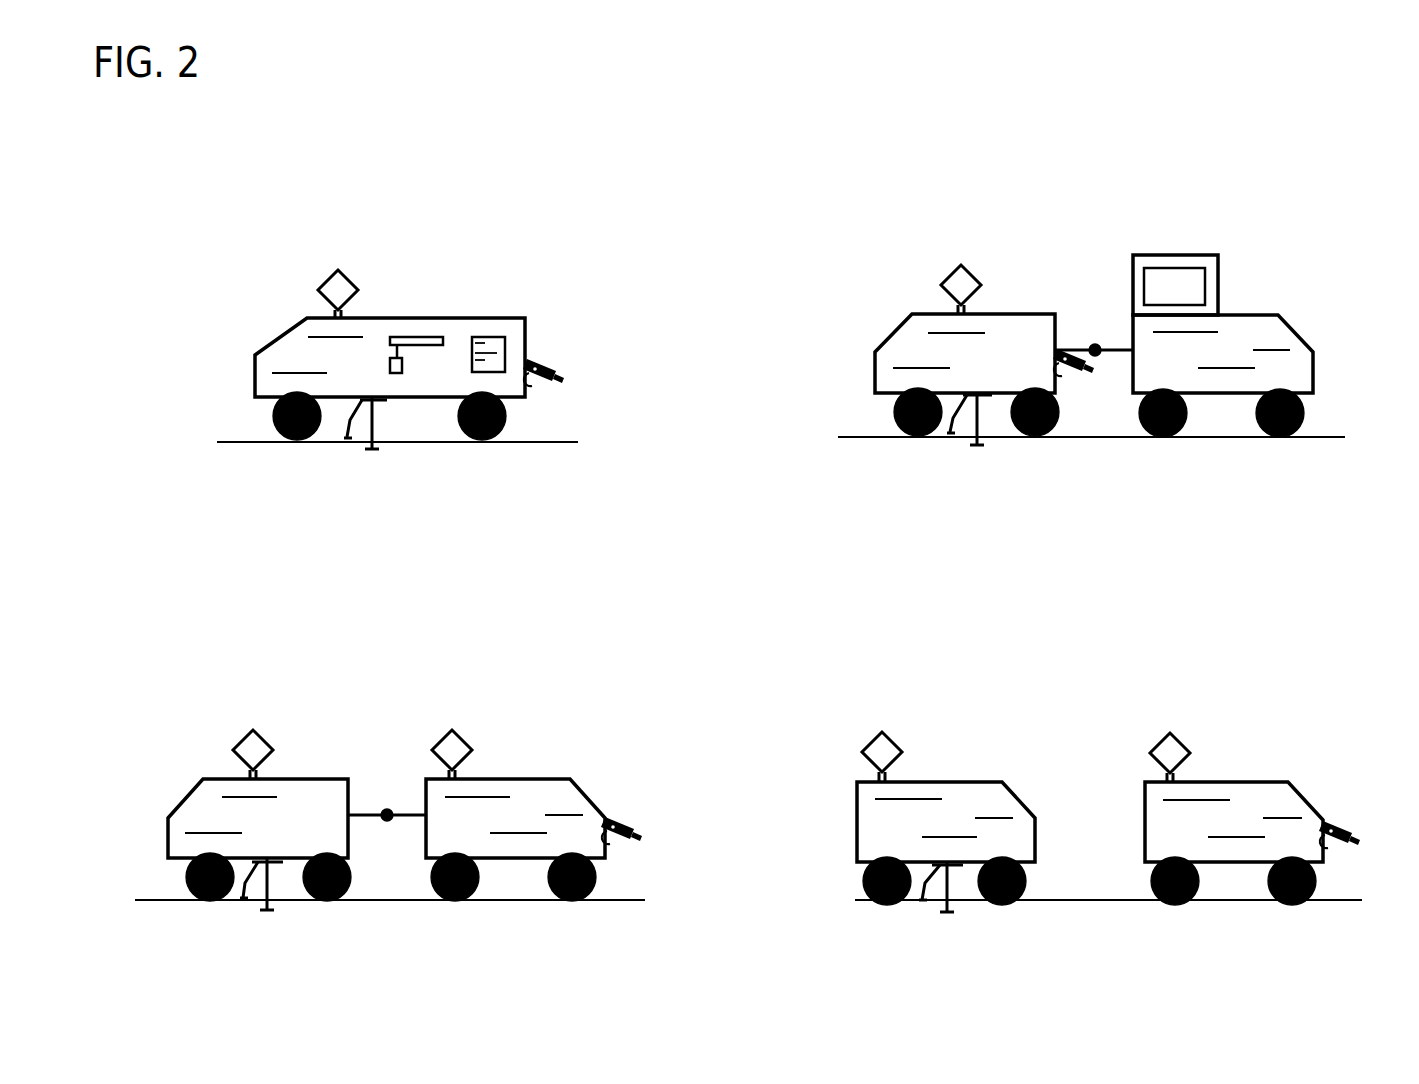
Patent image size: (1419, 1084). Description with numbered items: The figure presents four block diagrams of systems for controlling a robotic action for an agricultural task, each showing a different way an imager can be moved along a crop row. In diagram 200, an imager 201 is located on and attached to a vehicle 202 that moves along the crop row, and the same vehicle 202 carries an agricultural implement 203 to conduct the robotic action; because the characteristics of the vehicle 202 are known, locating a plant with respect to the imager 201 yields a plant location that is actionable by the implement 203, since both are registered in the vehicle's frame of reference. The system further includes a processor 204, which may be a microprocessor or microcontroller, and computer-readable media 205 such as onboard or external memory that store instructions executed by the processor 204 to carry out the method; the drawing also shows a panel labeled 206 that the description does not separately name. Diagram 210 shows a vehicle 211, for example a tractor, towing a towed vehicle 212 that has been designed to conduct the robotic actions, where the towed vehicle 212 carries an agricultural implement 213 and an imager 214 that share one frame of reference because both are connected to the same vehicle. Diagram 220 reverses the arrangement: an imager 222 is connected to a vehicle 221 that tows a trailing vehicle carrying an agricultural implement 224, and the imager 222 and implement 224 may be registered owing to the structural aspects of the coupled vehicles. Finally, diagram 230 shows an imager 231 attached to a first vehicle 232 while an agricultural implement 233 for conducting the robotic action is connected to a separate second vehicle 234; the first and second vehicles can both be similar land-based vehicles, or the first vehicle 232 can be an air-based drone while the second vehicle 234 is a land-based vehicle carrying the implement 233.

The diagram 200 is at (427, 196).
The imager 201 is at (550, 363).
The vehicle 202 is at (315, 318).
The agricultural implement 203 is at (377, 423).
The processor 204 is at (405, 358).
The computer-readable media 205 is at (407, 335).
The control panel 206 is at (502, 337).
The diagram 210 is at (1112, 190).
The vehicle 211 is at (1243, 312).
The towed vehicle 212 is at (935, 310).
The agricultural implement 213 is at (978, 447).
The imager 214 is at (1072, 375).
The diagram 220 is at (395, 682).
The vehicle 221 is at (523, 778).
The imager 222 is at (613, 822).
The agricultural implement 224 is at (218, 777).
The diagram 230 is at (1135, 682).
The imager 231 is at (1350, 835).
The first vehicle 232 is at (1217, 780).
The agricultural implement 233 is at (945, 913).
The second vehicle 234 is at (957, 780).